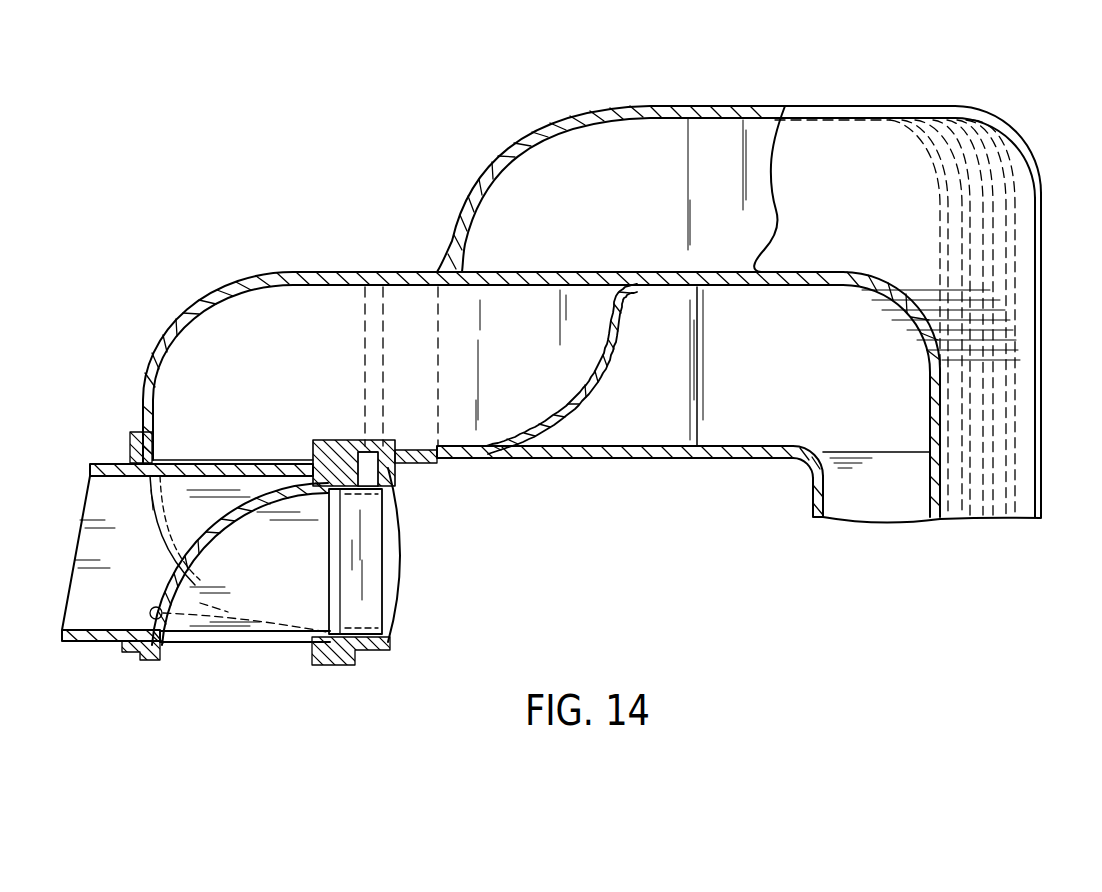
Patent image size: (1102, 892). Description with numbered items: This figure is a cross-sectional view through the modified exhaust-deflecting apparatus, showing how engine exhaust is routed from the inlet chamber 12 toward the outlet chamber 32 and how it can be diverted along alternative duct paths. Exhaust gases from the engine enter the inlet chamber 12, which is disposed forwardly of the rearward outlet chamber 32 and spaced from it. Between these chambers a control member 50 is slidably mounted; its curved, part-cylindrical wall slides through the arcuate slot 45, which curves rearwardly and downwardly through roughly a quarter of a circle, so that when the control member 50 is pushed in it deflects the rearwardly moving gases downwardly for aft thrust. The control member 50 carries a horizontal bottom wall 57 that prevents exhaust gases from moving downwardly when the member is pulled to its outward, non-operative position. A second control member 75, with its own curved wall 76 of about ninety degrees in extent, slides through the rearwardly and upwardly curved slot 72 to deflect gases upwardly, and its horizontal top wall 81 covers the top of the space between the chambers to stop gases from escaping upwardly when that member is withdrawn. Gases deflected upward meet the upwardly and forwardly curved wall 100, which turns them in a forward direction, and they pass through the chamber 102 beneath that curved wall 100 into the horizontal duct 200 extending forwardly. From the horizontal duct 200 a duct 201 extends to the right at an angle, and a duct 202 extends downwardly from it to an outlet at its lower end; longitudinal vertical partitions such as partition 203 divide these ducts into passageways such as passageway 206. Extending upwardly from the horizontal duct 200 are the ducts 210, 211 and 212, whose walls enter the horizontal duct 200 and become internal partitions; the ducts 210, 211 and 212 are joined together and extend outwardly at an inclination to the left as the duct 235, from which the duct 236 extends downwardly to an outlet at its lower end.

The inlet chamber 12 is at (392, 587).
The outlet chamber 32 is at (92, 648).
The arcuate slot 45 is at (164, 613).
The control member 50 is at (245, 520).
The horizontal bottom wall 57 is at (211, 643).
The curved slot 72 is at (177, 528).
The second control member 75 is at (150, 518).
The curved wall 76 is at (150, 500).
The horizontal wall 81 is at (228, 468).
The curved wall 100 is at (192, 311).
The chamber 102 is at (208, 369).
The horizontal duct 200 is at (597, 461).
The duct 201 is at (832, 430).
The duct 202 is at (812, 512).
The longitudinal vertical partition 203 is at (795, 371).
The passageway 206 is at (804, 462).
The duct 210 is at (647, 106).
The duct 211 is at (949, 317).
The duct 212 is at (986, 317).
The duct 235 is at (930, 112).
The duct 236 is at (1043, 203).